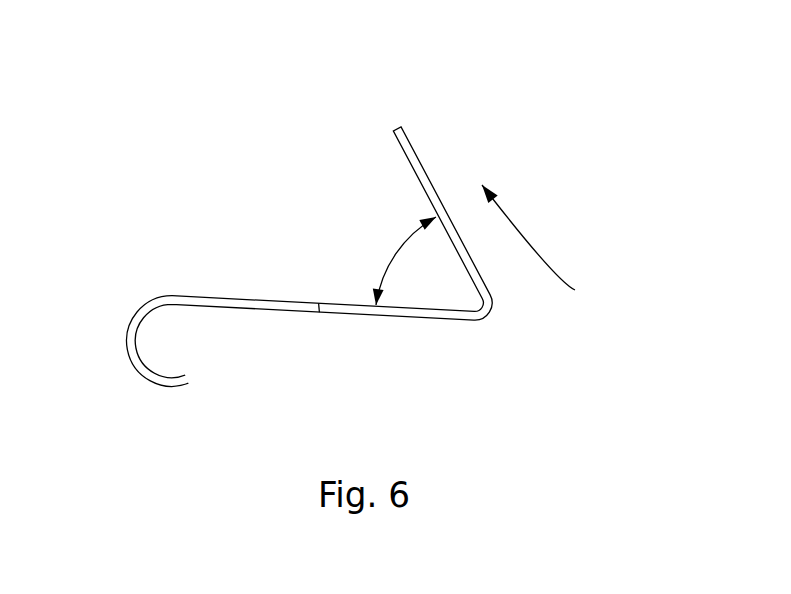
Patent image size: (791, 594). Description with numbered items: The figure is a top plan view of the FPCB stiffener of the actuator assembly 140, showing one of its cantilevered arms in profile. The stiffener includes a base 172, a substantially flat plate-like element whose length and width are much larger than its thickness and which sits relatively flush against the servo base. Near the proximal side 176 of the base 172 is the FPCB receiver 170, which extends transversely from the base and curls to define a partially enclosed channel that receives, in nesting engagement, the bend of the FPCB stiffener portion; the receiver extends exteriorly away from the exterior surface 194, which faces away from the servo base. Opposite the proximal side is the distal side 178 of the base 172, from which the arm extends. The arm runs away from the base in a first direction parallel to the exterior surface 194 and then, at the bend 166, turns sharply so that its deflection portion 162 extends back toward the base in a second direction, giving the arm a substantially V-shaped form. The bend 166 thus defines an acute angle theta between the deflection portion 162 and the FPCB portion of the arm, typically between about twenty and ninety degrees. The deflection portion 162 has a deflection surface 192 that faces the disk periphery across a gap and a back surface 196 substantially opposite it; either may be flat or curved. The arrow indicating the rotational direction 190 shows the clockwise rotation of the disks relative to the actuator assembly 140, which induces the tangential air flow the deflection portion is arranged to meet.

The actuator assembly 140 is at (412, 105).
The deflection portion 162 is at (436, 189).
The bend 166 is at (488, 308).
The FPCB receiver 170 is at (133, 364).
The base 172 is at (250, 293).
The proximal side 176 is at (173, 293).
The distal side 178 is at (321, 313).
The rotational direction 190 is at (546, 262).
The deflection surface 192 is at (417, 153).
The exterior surface 194 is at (263, 312).
The back surface 196 is at (398, 143).
The acute angle theta is at (392, 250).